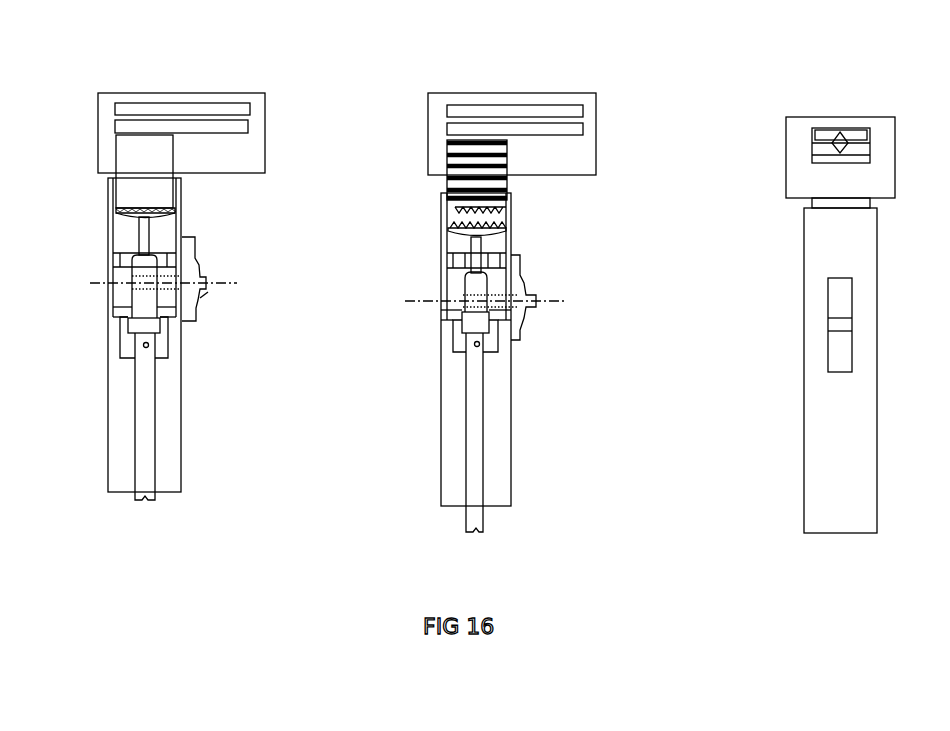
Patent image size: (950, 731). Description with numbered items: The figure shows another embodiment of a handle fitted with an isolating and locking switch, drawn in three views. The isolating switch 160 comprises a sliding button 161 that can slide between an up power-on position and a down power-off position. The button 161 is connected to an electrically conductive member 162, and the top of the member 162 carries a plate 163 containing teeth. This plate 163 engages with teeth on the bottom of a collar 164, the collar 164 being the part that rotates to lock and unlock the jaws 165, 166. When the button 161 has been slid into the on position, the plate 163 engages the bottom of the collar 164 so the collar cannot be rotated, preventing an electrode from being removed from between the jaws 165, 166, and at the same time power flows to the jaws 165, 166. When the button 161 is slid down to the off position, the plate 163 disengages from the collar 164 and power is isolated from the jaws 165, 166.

The isolating switch 160 is at (222, 254).
The sliding button 161 is at (195, 257).
The electrically conductive member 162 is at (139, 308).
The plate 163 is at (138, 217).
The collar 164 is at (149, 148).
The jaw 165 is at (180, 108).
The jaw 166 is at (217, 128).